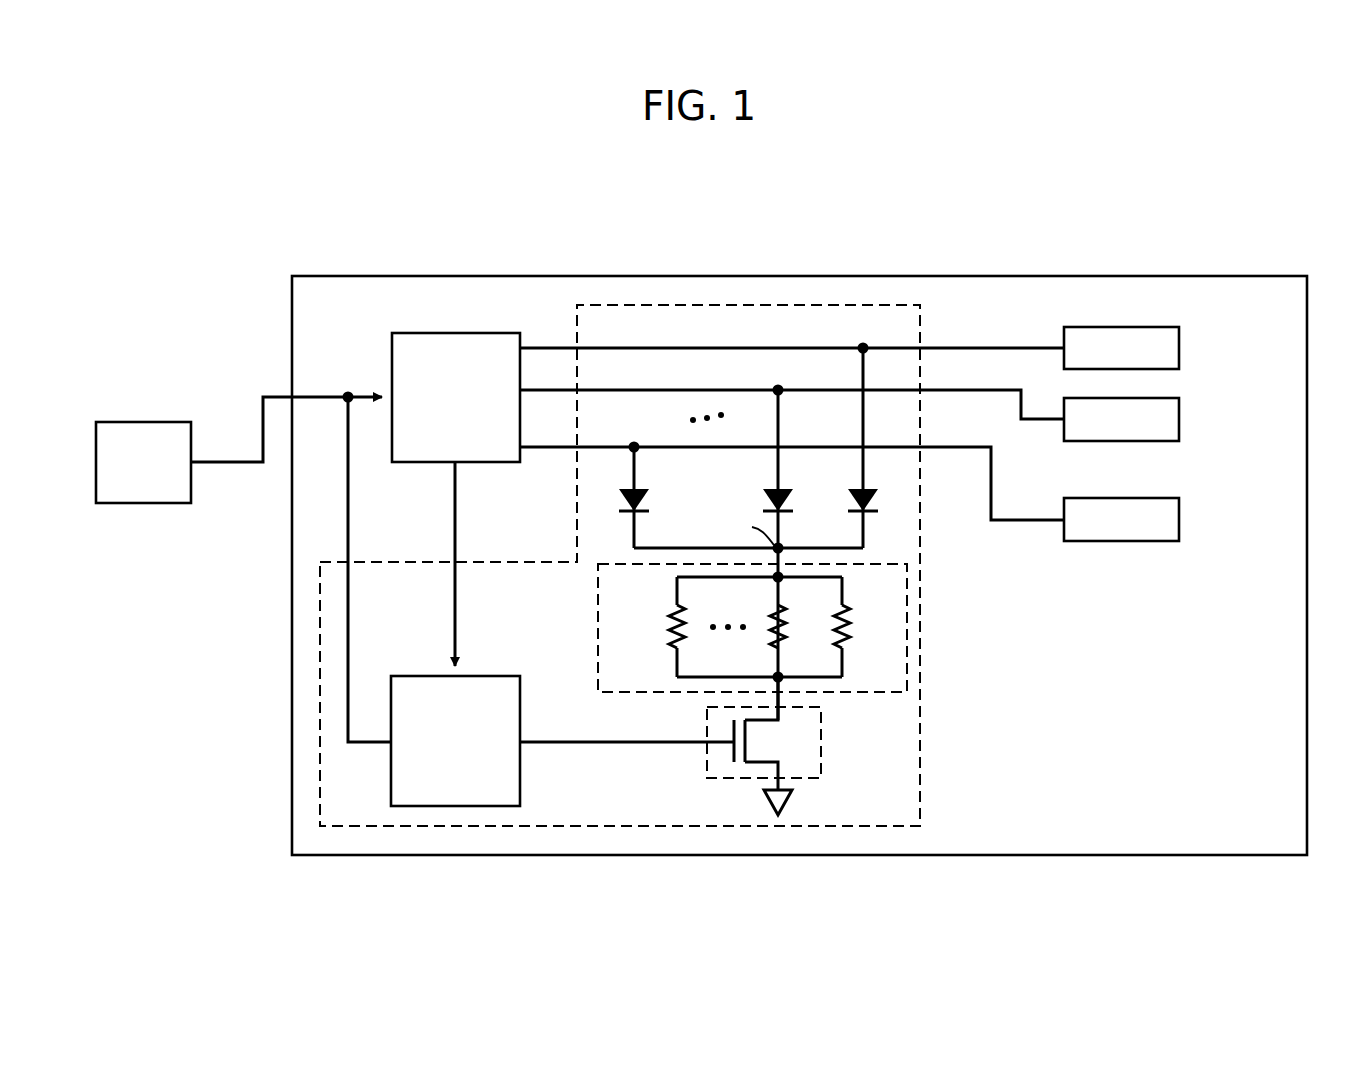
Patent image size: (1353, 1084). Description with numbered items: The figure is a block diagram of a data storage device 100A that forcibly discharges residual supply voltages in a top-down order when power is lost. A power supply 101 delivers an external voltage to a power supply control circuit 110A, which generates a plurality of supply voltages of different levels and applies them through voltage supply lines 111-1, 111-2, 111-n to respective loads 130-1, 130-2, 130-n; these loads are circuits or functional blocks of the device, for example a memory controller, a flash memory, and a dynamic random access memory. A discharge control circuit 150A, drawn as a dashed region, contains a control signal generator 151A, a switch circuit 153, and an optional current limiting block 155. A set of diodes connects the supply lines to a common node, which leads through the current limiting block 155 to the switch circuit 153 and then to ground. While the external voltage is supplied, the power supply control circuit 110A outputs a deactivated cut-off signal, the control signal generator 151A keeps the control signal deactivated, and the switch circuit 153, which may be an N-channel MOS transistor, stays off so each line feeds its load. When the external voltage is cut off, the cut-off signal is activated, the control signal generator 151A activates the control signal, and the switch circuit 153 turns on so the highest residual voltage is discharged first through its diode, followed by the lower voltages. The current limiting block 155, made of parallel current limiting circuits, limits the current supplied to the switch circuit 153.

The data storage device 100A is at (1172, 240).
The power supply 101 is at (143, 422).
The power supply control circuit 110A is at (487, 313).
The voltage supply line 111-1 is at (1013, 333).
The voltage supply line 111-2 is at (993, 376).
The voltage supply line 111-n is at (978, 433).
The load 130-1 is at (1180, 348).
The load 130-2 is at (1180, 419).
The load 130-n is at (1180, 520).
The discharge control circuit 150A is at (921, 608).
The control signal generator 151A is at (520, 773).
The switch circuit 153 is at (821, 742).
The current limiting block 155 is at (598, 612).